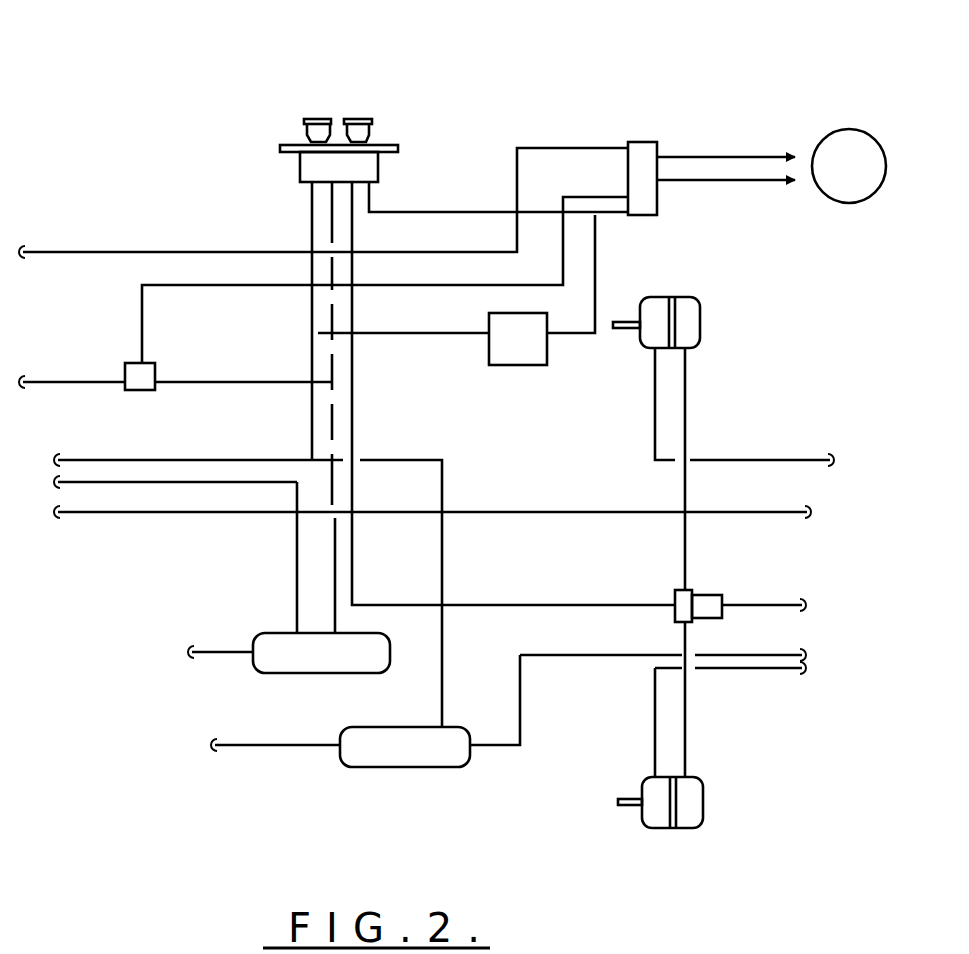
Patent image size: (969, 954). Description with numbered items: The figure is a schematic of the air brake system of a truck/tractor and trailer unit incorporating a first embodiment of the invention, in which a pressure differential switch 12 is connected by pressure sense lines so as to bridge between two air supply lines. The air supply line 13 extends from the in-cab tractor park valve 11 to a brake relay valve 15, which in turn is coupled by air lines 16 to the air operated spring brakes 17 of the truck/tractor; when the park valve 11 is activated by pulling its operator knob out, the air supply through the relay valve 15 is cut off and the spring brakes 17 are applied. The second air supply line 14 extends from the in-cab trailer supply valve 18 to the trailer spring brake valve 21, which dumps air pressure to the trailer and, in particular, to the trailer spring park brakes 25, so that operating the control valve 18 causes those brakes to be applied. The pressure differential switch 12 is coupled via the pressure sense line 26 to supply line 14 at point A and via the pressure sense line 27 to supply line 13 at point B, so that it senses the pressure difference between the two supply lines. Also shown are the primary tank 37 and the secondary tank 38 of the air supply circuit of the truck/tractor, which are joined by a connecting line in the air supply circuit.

The in-cab brake valve 11 is at (312, 127).
The in-cab control valve 18 is at (365, 119).
The air supply line 13 is at (347, 220).
The air supply line 14 is at (458, 212).
The trailer spring brake valve 21 is at (647, 147).
The trailer spring brakes 25 is at (771, 166).
The point A is at (586, 190).
The pressure sense line 26 is at (595, 258).
The pressure differential switch 12 is at (525, 350).
The pressure sense line 27 is at (383, 333).
The point B is at (328, 332).
The spring brakes 17 is at (685, 307).
The air lines 16 is at (685, 407).
The brake relay valve 15 is at (697, 598).
The secondary tank 38 is at (297, 637).
The primary tank 37 is at (355, 740).